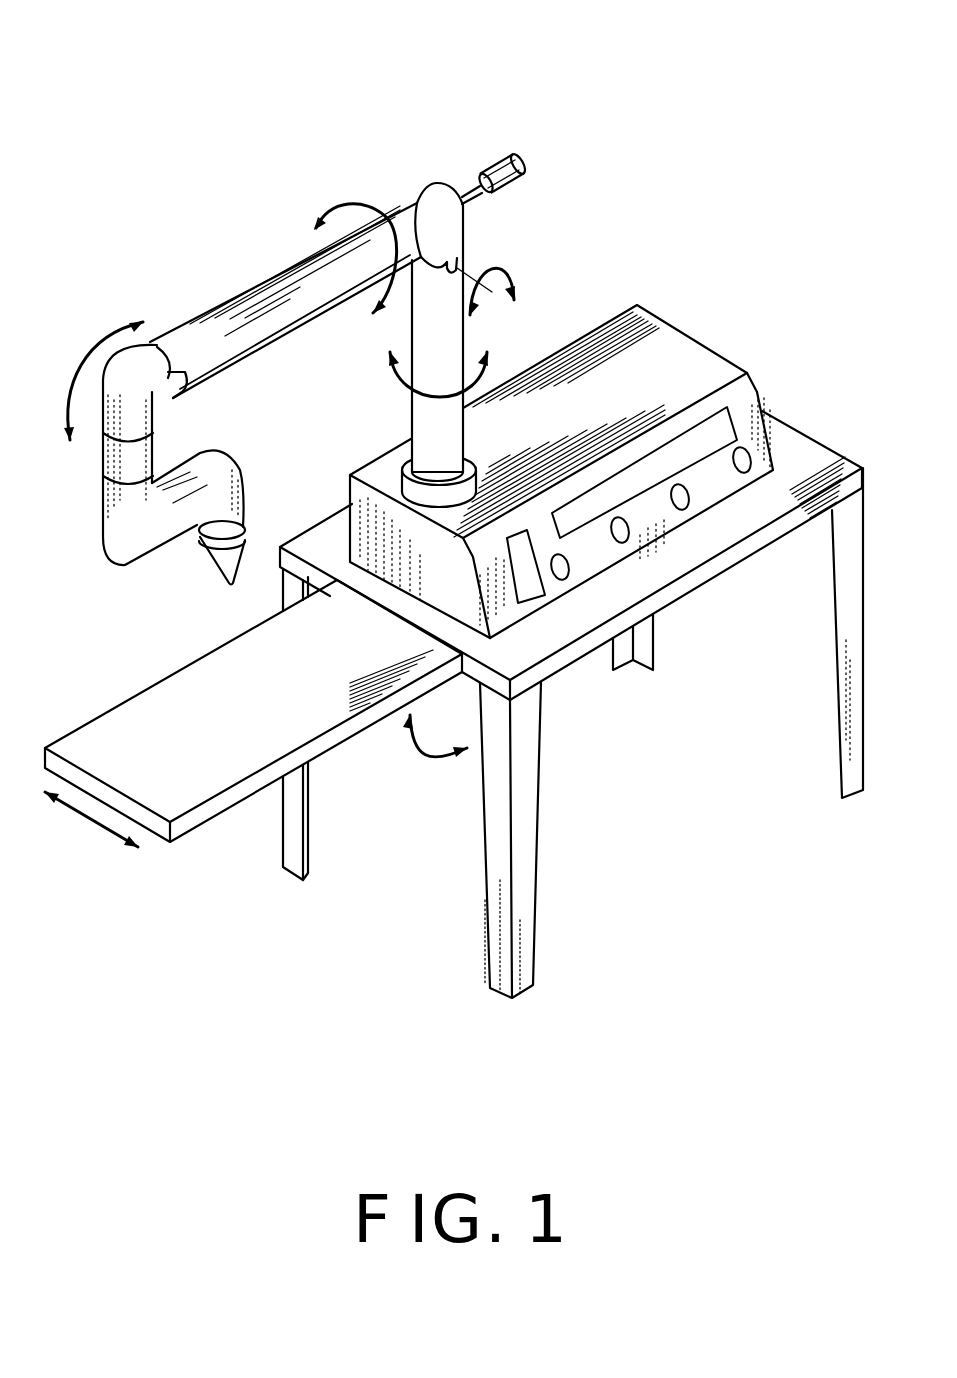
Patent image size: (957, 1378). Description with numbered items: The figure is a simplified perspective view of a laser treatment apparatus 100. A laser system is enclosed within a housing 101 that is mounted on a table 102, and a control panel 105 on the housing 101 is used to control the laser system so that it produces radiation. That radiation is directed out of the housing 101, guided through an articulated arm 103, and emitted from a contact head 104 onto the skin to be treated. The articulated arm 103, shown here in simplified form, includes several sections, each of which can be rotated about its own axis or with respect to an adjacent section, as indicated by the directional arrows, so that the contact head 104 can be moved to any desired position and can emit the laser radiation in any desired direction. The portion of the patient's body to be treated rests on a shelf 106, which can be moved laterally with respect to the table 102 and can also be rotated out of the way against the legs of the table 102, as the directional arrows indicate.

The laser treatment apparatus 100 is at (407, 183).
The housing 101 is at (668, 355).
The table 102 is at (682, 585).
The articulated arm 103 is at (268, 283).
The contact head 104 is at (213, 582).
The control panel 105 is at (757, 447).
The shelf 106 is at (195, 817).